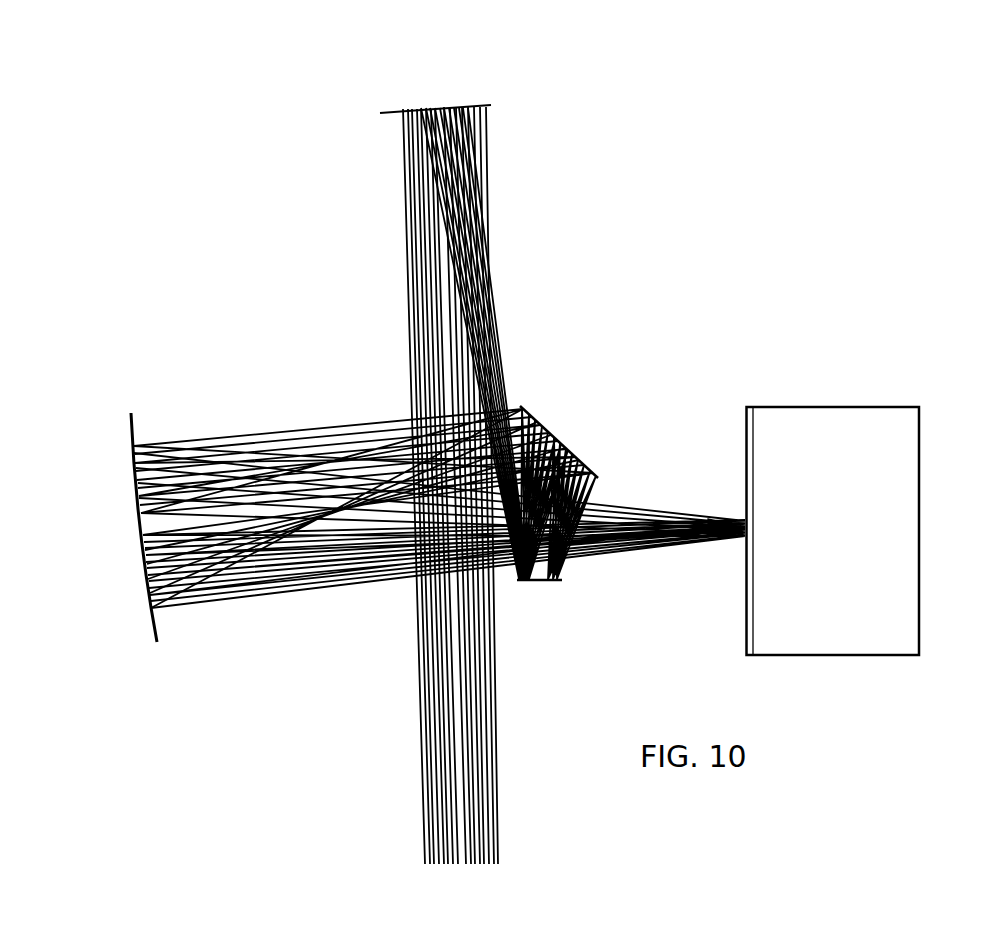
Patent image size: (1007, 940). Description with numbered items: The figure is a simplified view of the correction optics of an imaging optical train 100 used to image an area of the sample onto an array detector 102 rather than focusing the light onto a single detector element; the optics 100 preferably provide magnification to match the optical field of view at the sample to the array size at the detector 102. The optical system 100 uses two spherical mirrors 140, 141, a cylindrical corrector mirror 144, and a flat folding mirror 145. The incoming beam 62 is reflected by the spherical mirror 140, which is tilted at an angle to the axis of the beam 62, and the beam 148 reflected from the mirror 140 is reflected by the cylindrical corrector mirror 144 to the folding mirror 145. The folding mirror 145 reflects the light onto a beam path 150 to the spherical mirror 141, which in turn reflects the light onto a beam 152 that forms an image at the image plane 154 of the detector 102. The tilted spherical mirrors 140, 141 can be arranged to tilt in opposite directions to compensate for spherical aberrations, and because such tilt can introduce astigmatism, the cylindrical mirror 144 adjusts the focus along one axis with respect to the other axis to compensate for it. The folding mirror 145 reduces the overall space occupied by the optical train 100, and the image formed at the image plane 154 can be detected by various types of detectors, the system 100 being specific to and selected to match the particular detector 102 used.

The imaging optical train 100 is at (628, 112).
The spherical mirror 140 is at (437, 100).
The incoming beam 62 is at (486, 776).
The beam 148 is at (488, 298).
The folding mirror 145 is at (556, 431).
The cylindrical corrector mirror 144 is at (533, 584).
The beam path 150 is at (290, 427).
The beam 152 is at (290, 582).
The spherical mirror 141 is at (128, 532).
The image plane 154 is at (737, 497).
The array detector 102 is at (805, 398).